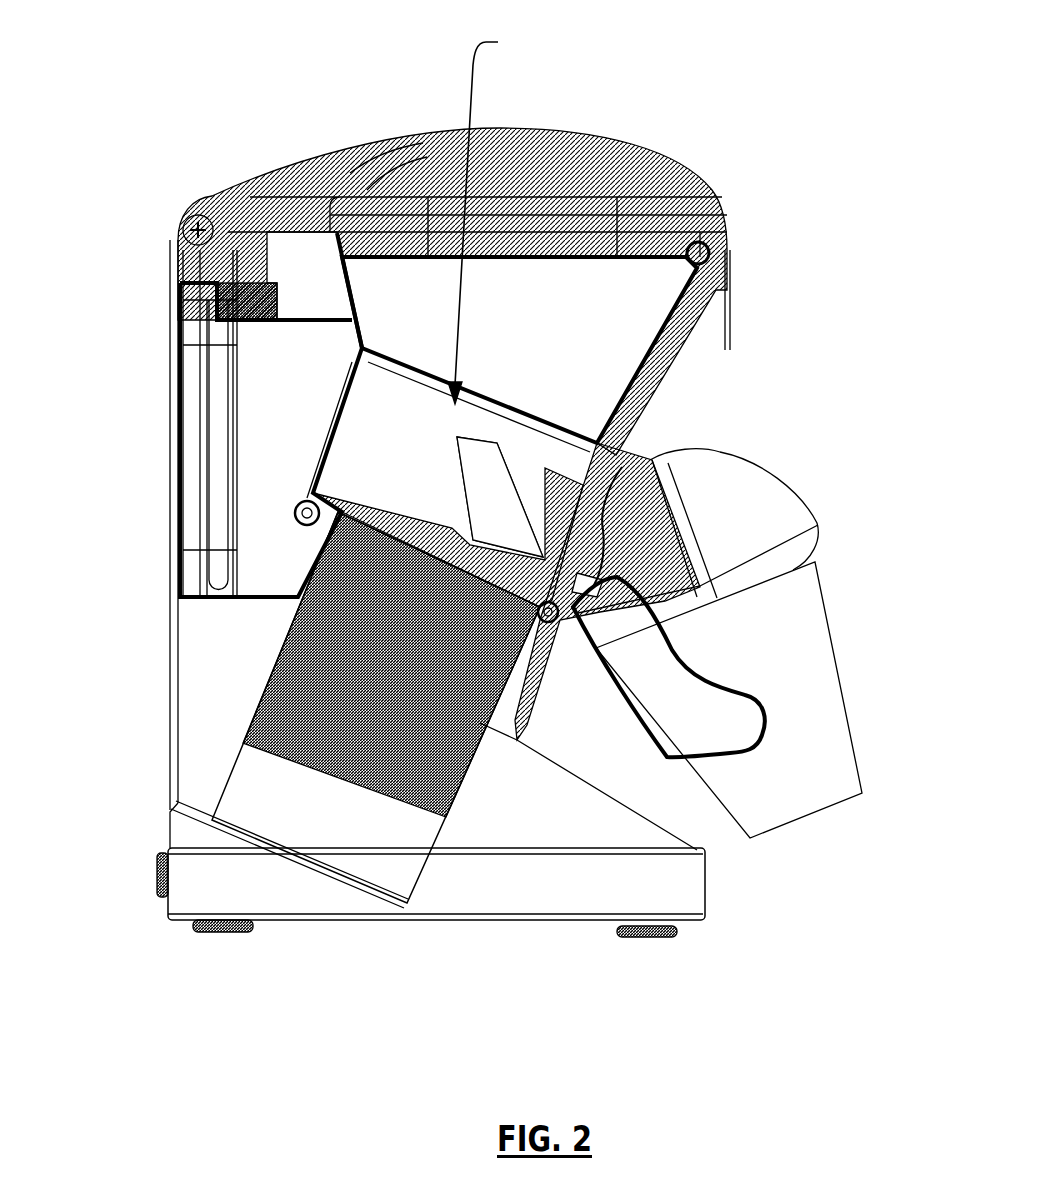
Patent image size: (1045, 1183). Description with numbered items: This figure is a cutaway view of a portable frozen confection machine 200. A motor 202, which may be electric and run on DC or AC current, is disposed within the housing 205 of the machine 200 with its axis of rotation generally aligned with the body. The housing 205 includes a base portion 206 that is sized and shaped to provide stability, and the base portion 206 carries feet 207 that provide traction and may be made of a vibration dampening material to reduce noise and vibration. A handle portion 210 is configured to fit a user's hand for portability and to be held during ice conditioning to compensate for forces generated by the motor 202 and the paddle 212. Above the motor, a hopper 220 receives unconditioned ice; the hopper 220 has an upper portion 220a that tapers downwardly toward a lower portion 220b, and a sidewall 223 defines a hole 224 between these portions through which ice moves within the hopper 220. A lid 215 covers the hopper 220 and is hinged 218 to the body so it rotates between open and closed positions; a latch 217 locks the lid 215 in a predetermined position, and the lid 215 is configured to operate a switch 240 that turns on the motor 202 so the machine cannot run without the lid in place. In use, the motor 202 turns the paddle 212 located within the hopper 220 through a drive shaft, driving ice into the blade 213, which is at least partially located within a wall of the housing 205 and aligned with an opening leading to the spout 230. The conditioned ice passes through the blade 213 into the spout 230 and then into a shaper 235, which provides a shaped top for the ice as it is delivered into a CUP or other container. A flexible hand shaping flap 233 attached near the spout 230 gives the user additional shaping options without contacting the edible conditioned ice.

The frozen confection machine 200 is at (368, 93).
The motor 202 is at (372, 705).
The housing 205 is at (178, 607).
The base portion 206 is at (663, 893).
The feet 207 is at (222, 925).
The handle portion 210 is at (200, 517).
The paddle 212 is at (445, 500).
The blade 213 is at (552, 625).
The lid 215 is at (588, 176).
The latch 217 is at (710, 263).
The hinge 218 is at (187, 228).
The hopper 220 is at (623, 375).
The upper portion of hopper 220a is at (577, 306).
The lower portion of hopper 220b is at (408, 400).
The sidewall 223 is at (332, 413).
The hole 224 is at (494, 218).
The spout 230 is at (603, 530).
The flexible hand shaping flap 233 is at (647, 735).
The shaper 235 is at (715, 523).
The switch 240 is at (183, 297).
The cup CUP is at (770, 713).